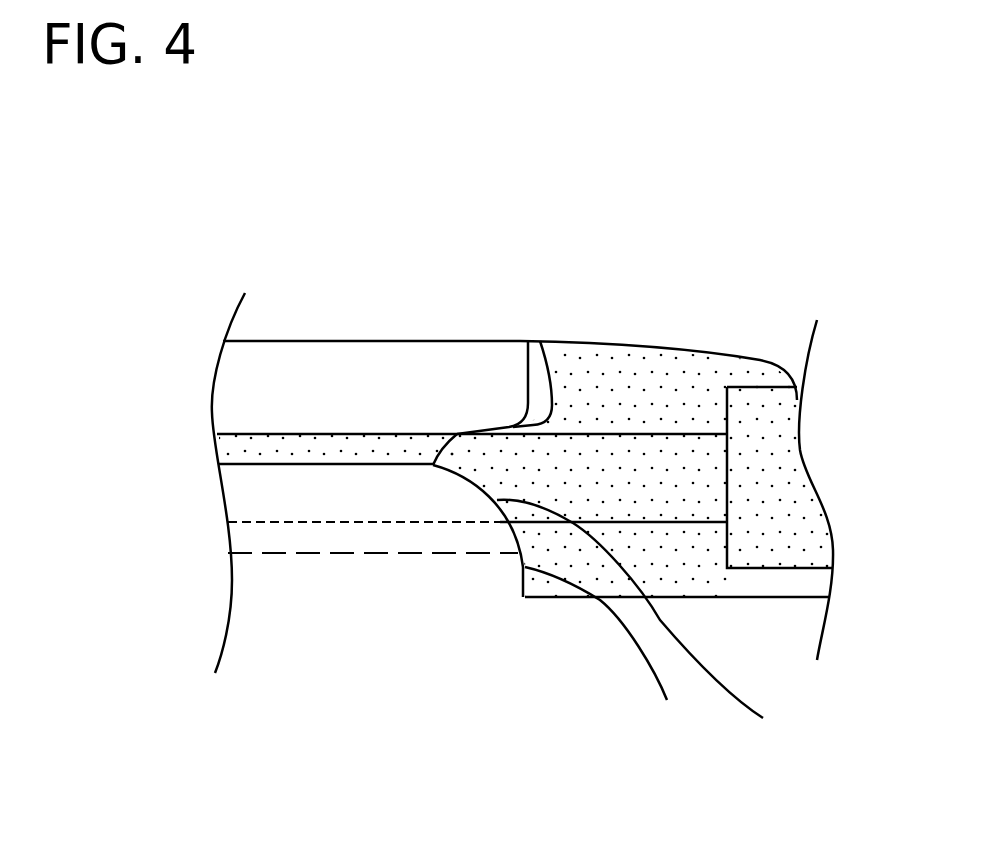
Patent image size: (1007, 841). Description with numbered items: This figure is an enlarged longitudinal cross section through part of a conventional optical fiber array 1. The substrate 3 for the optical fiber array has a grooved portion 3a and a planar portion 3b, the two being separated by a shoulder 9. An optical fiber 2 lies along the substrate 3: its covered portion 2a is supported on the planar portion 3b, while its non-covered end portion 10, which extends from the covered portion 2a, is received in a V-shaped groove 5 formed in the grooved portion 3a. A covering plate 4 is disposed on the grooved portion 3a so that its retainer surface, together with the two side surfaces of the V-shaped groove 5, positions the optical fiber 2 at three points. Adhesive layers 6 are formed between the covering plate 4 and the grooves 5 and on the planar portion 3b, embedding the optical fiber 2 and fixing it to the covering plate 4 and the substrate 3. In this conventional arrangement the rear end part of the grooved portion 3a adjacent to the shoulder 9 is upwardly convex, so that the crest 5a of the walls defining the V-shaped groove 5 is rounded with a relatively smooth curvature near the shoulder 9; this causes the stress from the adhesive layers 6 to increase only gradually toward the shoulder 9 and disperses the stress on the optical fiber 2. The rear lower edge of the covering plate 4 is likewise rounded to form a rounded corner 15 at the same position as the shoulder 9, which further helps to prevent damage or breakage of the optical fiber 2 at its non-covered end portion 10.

The optical fiber array 1 is at (435, 272).
The optical fiber 2 is at (731, 374).
The covered portion 2a is at (762, 388).
The substrate for optical fiber array 3 is at (409, 613).
The grooved portion 3a is at (375, 535).
The planar portion 3b is at (590, 622).
The covering plate 4 is at (388, 365).
The V-shaped groove 5 is at (287, 547).
The crest 5a is at (653, 621).
The adhesive layer 6 is at (278, 445).
The shoulder 9 is at (605, 653).
The non-covered end portion 10 is at (668, 457).
The rounded corner 15 is at (540, 341).